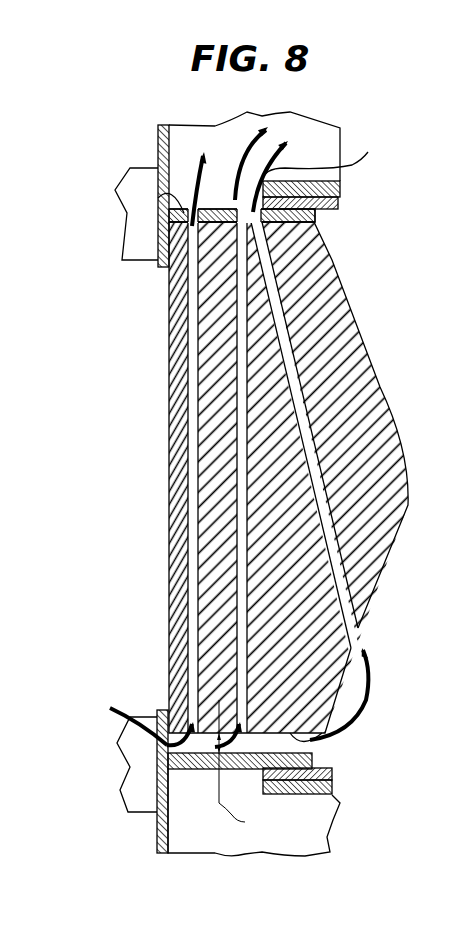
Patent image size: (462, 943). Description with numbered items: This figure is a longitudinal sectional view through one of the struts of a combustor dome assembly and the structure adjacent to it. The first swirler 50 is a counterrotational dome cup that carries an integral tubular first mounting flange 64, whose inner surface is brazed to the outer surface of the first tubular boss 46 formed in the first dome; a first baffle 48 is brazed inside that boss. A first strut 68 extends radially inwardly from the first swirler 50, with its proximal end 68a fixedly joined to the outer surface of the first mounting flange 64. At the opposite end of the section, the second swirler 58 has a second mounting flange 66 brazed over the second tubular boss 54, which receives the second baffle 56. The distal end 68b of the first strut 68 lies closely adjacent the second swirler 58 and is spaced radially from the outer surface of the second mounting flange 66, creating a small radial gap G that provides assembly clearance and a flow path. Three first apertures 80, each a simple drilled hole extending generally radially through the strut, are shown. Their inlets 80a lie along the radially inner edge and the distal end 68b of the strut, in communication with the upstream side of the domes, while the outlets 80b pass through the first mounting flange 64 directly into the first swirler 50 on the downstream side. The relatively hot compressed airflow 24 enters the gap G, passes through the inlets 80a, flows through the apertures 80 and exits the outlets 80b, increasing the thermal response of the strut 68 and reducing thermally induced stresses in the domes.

The first swirler 50 is at (110, 171).
The outlet 80b is at (158, 198).
The first baffle 48 is at (343, 186).
The first tubular boss 46 is at (340, 205).
The first mounting flange 64 is at (316, 216).
The proximal end of first strut 68a is at (318, 226).
The first strut 68 is at (373, 385).
The first aperture 80 is at (193, 377).
The inlet 80a is at (360, 637).
The compressed airflow 24 is at (116, 718).
The second swirler 58 is at (110, 768).
The distal end of first strut 68b is at (313, 742).
The second mounting flange 66 is at (313, 762).
The second tubular boss 54 is at (333, 773).
The second baffle 56 is at (333, 790).
The radial gap G is at (238, 768).